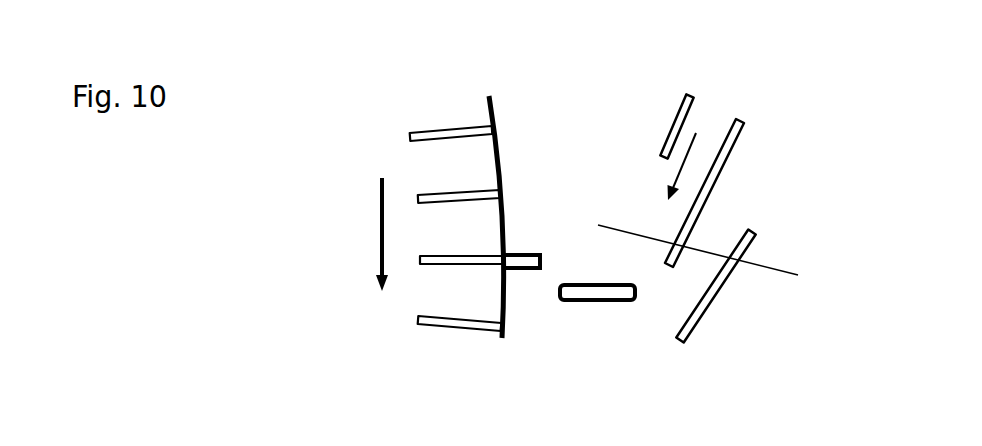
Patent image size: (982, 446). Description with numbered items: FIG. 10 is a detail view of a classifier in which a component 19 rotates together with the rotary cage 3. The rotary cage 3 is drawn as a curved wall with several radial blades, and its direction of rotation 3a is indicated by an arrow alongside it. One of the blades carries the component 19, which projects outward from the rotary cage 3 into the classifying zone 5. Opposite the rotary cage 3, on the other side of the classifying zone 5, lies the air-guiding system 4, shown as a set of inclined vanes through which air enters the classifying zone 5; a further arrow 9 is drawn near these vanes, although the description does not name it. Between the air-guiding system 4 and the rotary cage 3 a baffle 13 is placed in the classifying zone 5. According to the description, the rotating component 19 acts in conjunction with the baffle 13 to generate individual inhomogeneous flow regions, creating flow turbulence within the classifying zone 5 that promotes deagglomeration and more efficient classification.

The rotary cage 3 is at (498, 153).
The direction of rotation 3a is at (382, 203).
The component rotating with the rotary cage 19 is at (517, 253).
The flow direction 9 is at (688, 152).
The air-guiding system 4 is at (735, 148).
The classifying zone 5 is at (708, 258).
The baffle 13 is at (593, 304).